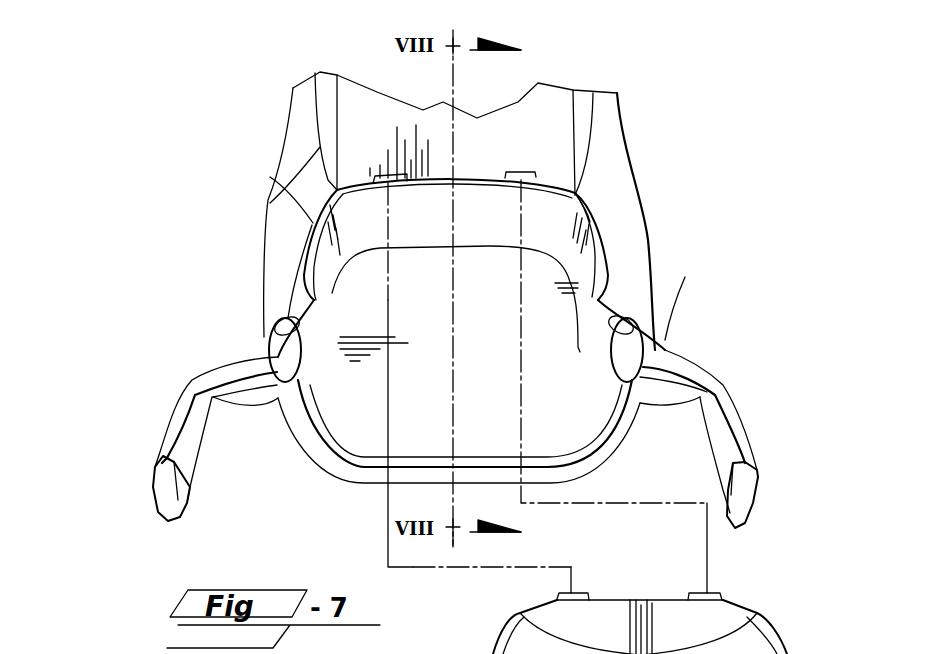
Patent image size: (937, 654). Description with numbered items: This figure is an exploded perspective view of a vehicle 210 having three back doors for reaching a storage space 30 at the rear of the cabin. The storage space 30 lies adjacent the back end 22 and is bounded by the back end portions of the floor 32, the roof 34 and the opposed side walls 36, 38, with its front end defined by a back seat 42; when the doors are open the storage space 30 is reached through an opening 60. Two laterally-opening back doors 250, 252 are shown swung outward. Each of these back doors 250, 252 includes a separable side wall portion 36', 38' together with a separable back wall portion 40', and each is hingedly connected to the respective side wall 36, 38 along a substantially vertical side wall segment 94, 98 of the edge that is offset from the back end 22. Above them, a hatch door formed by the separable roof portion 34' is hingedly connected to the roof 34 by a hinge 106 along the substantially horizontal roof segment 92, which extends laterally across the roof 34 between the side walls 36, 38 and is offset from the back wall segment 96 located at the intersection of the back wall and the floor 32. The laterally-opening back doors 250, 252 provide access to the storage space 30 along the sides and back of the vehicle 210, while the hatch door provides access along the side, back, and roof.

The back end 22 is at (580, 525).
The storage space 30 is at (368, 398).
The floor 32 is at (503, 342).
The roof 34 is at (311, 388).
The separable roof portion 34' is at (640, 623).
The side wall 36 is at (642, 210).
The separable side wall portion 36' is at (679, 385).
The side wall 38 is at (243, 205).
The separable side wall portion 38' is at (234, 376).
The separable back wall portion 40' is at (455, 464).
The back seat 42 is at (438, 224).
The opening 60 is at (323, 475).
The roof segment 92 is at (503, 178).
The side wall segment 94 is at (596, 270).
The back wall segment 96 is at (487, 461).
The side wall segment 98 is at (297, 207).
The hinge 106 is at (346, 649).
The vehicle 210 is at (686, 138).
The back door 250 is at (712, 340).
The back door 252 is at (208, 350).